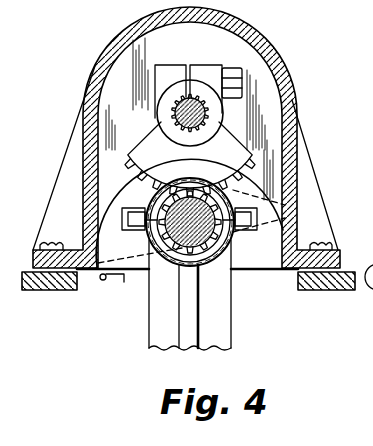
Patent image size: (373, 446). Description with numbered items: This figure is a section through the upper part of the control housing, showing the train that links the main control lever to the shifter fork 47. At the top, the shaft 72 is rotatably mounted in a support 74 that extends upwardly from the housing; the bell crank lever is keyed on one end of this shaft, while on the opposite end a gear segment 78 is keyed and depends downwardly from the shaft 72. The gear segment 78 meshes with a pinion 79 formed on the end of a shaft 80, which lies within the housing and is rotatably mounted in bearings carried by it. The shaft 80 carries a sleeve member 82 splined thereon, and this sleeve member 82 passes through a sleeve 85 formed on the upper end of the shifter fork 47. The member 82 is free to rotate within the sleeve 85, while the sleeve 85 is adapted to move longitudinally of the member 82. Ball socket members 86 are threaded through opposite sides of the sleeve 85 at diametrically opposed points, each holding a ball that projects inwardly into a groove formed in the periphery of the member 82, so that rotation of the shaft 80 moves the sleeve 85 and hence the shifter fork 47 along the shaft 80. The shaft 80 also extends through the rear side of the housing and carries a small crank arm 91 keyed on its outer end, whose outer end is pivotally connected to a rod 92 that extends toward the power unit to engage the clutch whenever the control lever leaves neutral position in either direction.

The shifter fork 47 is at (212, 313).
The shaft 72 is at (193, 99).
The support 74 is at (98, 62).
The gear segment 78 is at (148, 133).
The pinion 79 is at (193, 228).
The shaft 80 is at (165, 240).
The sleeve member 82 is at (170, 192).
The sleeve 85 is at (146, 198).
The ball socket members 86 is at (122, 221).
The crank arm 91 is at (240, 186).
The rod 92 is at (118, 282).